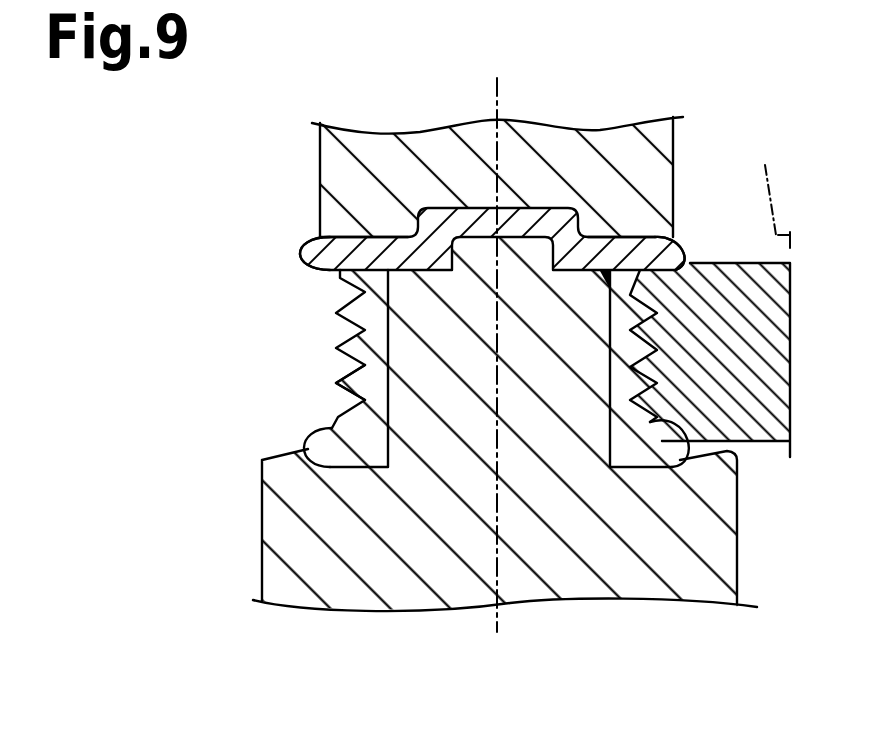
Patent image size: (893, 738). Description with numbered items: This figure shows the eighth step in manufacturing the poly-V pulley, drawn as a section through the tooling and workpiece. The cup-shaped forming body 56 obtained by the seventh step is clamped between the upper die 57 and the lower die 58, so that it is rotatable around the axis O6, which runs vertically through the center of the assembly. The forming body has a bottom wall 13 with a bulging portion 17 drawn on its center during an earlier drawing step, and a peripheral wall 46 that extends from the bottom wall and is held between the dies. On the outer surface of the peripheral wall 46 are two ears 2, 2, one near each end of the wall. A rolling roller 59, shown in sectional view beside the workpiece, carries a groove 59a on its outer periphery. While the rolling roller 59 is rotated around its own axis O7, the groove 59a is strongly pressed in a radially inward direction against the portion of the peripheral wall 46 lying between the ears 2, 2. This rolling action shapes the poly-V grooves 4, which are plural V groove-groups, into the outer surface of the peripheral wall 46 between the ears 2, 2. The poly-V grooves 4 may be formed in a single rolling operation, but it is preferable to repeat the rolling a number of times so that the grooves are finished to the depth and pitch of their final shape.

The ears 2 is at (302, 247).
The poly-V grooves 4 is at (642, 330).
The bottom wall 13 is at (608, 246).
The bulging portion 17 is at (458, 208).
The peripheral wall 46 is at (337, 383).
The cup-shaped forming body 56 is at (336, 315).
The upper die 57 is at (330, 147).
The lower die 58 is at (275, 540).
The rolling roller 59 is at (707, 273).
The groove 59a is at (640, 352).
The axis O6 is at (498, 107).
The axis O7 is at (767, 187).